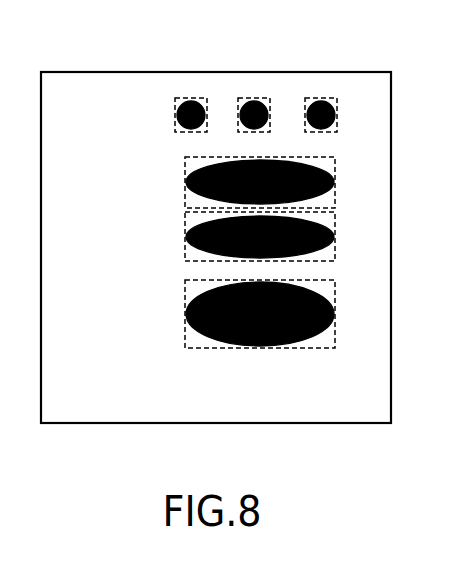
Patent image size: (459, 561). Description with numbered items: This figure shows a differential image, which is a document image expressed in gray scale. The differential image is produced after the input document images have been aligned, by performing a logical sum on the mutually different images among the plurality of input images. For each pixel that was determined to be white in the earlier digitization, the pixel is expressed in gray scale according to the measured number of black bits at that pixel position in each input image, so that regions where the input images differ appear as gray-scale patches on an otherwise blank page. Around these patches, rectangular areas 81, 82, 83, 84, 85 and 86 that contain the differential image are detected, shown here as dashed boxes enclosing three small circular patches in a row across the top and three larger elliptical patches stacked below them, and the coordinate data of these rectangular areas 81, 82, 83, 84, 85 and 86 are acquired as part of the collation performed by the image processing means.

The rectangular area 81 is at (190, 98).
The rectangular area 82 is at (252, 98).
The rectangular area 83 is at (318, 98).
The rectangular area 84 is at (337, 168).
The rectangular area 85 is at (333, 218).
The rectangular area 86 is at (333, 288).